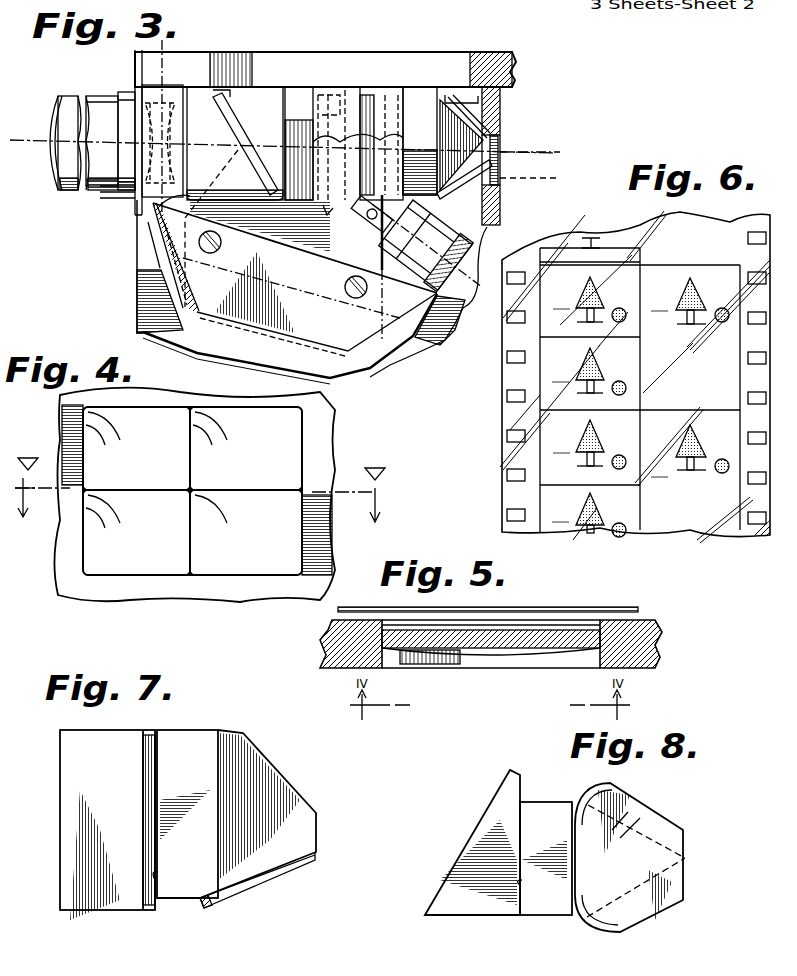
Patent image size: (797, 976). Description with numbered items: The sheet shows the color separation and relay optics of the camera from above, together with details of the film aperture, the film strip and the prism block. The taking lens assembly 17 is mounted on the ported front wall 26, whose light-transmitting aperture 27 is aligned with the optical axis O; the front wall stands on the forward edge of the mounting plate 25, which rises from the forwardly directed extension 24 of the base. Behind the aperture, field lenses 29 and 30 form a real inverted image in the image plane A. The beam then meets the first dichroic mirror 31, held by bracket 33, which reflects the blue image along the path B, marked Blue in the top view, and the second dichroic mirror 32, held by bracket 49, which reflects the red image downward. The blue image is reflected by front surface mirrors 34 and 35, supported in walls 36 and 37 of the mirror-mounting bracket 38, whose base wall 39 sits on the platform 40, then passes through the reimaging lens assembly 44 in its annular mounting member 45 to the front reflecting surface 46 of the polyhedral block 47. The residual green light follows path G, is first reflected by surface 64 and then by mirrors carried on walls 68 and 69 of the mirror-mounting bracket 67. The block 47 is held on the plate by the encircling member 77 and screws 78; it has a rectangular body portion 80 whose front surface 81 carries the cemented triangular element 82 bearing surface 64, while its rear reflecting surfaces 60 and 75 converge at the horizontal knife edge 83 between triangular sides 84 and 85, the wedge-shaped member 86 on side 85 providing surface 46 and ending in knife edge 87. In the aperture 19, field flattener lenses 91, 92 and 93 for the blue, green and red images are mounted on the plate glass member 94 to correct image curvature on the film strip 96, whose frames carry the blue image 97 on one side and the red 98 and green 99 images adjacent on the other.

In FIG. 3, the optical axis O is at (38, 140).
In FIG. 3, the taking lens assembly 17 is at (70, 96).
In FIG. 3, the aperture 19 is at (500, 148).
In FIG. 5, the aperture 19 is at (603, 655).
In FIG. 3, the forwardly directed extension 24 is at (140, 305).
In FIG. 3, the mounting plate 25 is at (425, 60).
In FIG. 3, the front wall 26 is at (130, 170).
In FIG. 3, the light-transmitting aperture 27 is at (137, 122).
In FIG. 3, the field lens 29 is at (145, 100).
In FIG. 3, the field lens 30 is at (168, 100).
In FIG. 3, the first dichroic mirror 31 is at (240, 135).
In FIG. 3, the second dichroic mirror 32 is at (332, 200).
In FIG. 3, the bracket 33 is at (243, 96).
In FIG. 3, the front surface mirror 34 is at (175, 232).
In FIG. 3, the front surface mirror 35 is at (393, 307).
In FIG. 3, the wall 36 is at (160, 262).
In FIG. 3, the wall 37 is at (363, 347).
In FIG. 3, the mirror-mounting bracket 38 is at (329, 366).
In FIG. 3, the base wall 39 is at (245, 312).
In FIG. 3, the platform 40 is at (162, 205).
In FIG. 3, the reimaging lens assembly 44 is at (470, 245).
In FIG. 3, the annular mounting member 45 is at (395, 233).
In FIG. 3, the front reflecting surface 46 is at (470, 200).
In FIG. 7, the front reflecting surface 46 is at (278, 878).
In FIG. 8, the front reflecting surface 46 is at (630, 915).
In FIG. 3, the polyhedral block 47 is at (436, 156).
In FIG. 7, the polyhedral block 47 is at (200, 730).
In FIG. 8, the polyhedral block 47 is at (578, 796).
In FIG. 3, the bracket 49 is at (340, 90).
In FIG. 8, the rearwardly directed reflecting surface 60 is at (678, 908).
In FIG. 7, the front reflecting surface 64 is at (75, 786).
In FIG. 8, the front reflecting surface 64 is at (495, 800).
In FIG. 3, the mirror-mounting bracket 67 is at (278, 95).
In FIG. 3, the wall 68 is at (300, 95).
In FIG. 3, the wall 69 is at (392, 95).
In FIG. 7, the rearwardly directed reflecting surface 75 is at (278, 812).
In FIG. 8, the rearwardly directed reflecting surface 75 is at (683, 832).
In FIG. 3, the encircling member 77 is at (470, 117).
In FIG. 3, the screws 78 is at (480, 98).
In FIG. 7, the body portion 80 is at (187, 814).
In FIG. 8, the body portion 80 is at (538, 802).
In FIG. 7, the front surface 81 is at (160, 885).
In FIG. 8, the front surface 81 is at (516, 890).
In FIG. 7, the triangularly shaped element 82 is at (107, 825).
In FIG. 8, the triangularly shaped element 82 is at (455, 862).
In FIG. 7, the knife edge 83 is at (318, 828).
In FIG. 8, the knife edge 83 is at (683, 863).
In FIG. 7, the triangularly configured side 84 is at (277, 763).
In FIG. 7, the triangularly configured side 85 is at (248, 882).
In FIG. 8, the triangularly configured side 85 is at (630, 815).
In FIG. 7, the wedge-shaped member 86 is at (230, 905).
In FIG. 8, the wedge-shaped member 86 is at (636, 861).
In FIG. 7, the knife edge 87 is at (318, 856).
In FIG. 8, the knife edge 87 is at (685, 882).
In FIG. 4, the field flattener lens 91 is at (246, 448).
In FIG. 4, the field flattener lens 92 is at (136, 448).
In FIG. 4, the field flattener lens 93 is at (192, 532).
In FIG. 5, the field flattener lens 93 is at (465, 648).
In FIG. 3, the plate glass member 94 is at (505, 152).
In FIG. 5, the plate glass member 94 is at (575, 632).
In FIG. 6, the film strip 96 is at (500, 450).
In FIG. 5, the film strip 96 is at (528, 606).
In FIG. 6, the blue frame 97 is at (688, 374).
In FIG. 6, the red frame 98 is at (587, 439).
In FIG. 6, the green frame 99 is at (586, 369).
In FIG. 3, the image plane A is at (165, 45).
In FIG. 3, the blue image path B is at (218, 183).
In FIG. 3, the green image path G is at (548, 152).
In FIG. 3, the blue ray path Blue is at (322, 300).